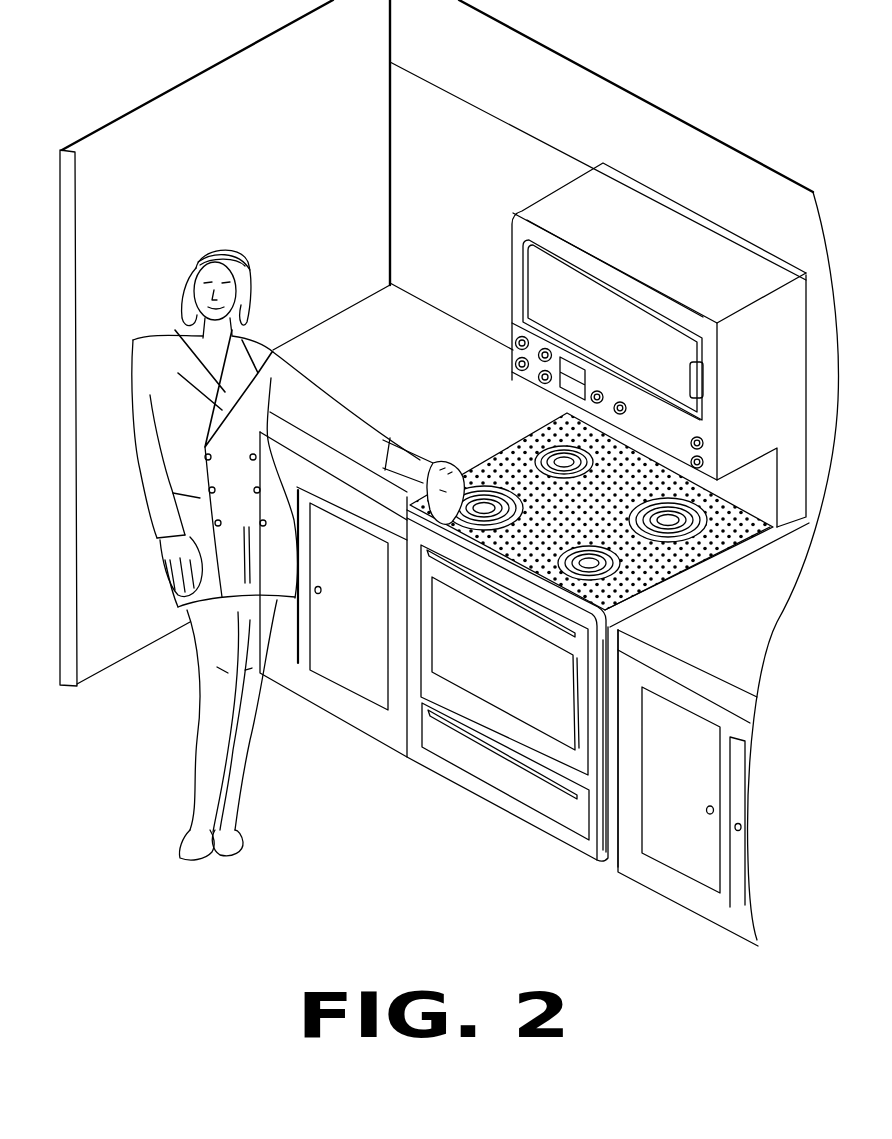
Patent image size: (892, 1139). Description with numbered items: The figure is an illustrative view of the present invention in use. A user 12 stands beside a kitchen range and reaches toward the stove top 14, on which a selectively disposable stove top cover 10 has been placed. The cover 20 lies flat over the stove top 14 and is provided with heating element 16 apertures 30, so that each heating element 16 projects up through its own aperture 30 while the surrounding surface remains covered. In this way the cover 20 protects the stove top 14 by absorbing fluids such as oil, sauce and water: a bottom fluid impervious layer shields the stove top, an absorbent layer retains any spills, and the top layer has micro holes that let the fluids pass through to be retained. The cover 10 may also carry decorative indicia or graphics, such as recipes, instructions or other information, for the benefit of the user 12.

The cover 10 is at (540, 434).
The user 12 is at (139, 330).
The stove top 14 is at (493, 453).
The heating element 16 is at (565, 478).
The cover 20 is at (623, 455).
The aperture 30 is at (565, 478).